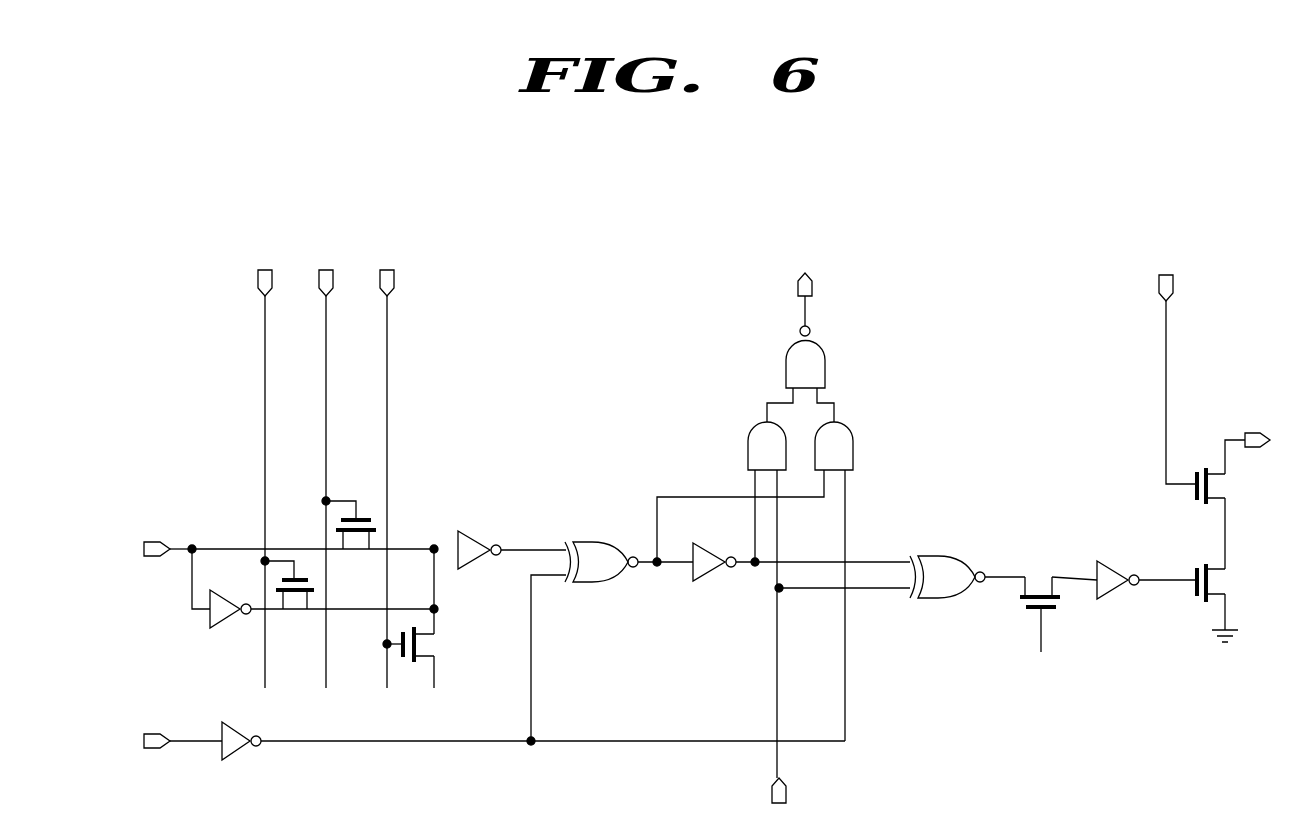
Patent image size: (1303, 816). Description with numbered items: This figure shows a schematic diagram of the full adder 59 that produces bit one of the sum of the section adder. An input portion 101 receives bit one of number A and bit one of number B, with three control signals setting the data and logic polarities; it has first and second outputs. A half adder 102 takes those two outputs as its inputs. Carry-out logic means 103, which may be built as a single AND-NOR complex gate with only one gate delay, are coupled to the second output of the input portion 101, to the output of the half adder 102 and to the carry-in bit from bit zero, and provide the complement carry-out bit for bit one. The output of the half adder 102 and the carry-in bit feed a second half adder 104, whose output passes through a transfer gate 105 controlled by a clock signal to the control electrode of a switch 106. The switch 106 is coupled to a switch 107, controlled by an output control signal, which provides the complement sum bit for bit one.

The full adder 59 is at (176, 111).
The input portion 101 is at (231, 456).
The half adder 102 is at (586, 488).
The carry-out logic means 103 is at (746, 333).
The half adder 104 is at (931, 533).
The transfer gate 105 is at (1043, 549).
The switch 106 is at (1201, 608).
The switch 107 is at (1195, 505).